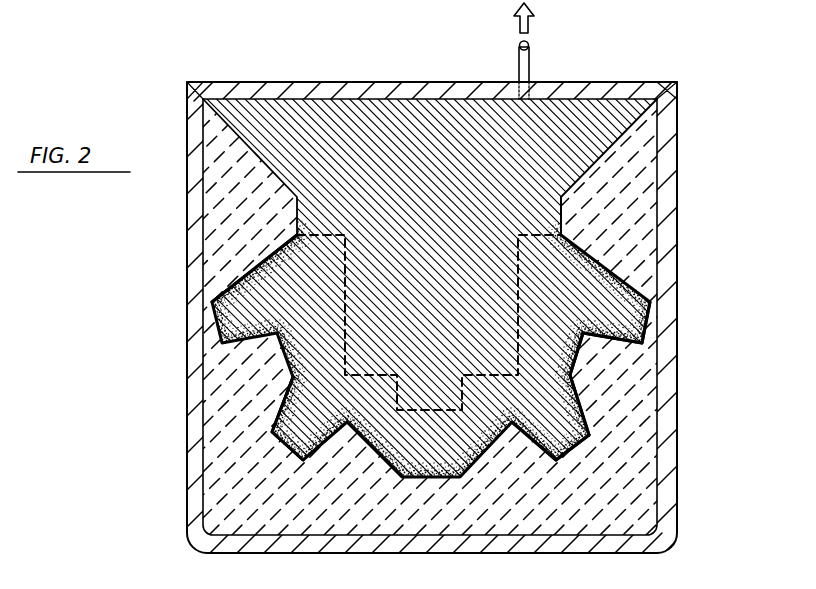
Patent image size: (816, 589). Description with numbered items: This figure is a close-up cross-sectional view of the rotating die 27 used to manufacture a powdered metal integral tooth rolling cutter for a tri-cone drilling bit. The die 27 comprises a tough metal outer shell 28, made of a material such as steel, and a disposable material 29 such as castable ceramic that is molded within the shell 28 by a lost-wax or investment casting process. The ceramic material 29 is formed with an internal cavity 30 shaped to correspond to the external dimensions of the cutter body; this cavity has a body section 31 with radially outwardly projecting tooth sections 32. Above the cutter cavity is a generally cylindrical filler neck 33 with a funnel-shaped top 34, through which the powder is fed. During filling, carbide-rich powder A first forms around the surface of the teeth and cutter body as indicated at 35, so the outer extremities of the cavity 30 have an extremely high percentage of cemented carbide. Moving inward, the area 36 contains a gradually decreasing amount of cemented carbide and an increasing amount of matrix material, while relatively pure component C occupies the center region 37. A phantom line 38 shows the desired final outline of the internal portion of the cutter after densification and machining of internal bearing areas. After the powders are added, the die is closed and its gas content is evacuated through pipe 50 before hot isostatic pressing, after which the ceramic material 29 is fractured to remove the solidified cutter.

The rotating die 27 is at (677, 230).
The outer shell 28 is at (668, 262).
The disposable material 29 is at (629, 403).
The internal cavity 30 is at (603, 338).
The body section 31 is at (568, 374).
The tooth sections 32 is at (573, 447).
The filler neck 33 is at (560, 218).
The funnel-shaped top 34 is at (640, 126).
The outer extremities of cavity 35 is at (220, 298).
The intermediate area 36 is at (268, 313).
The center region of cavity 37 is at (448, 353).
The phantom line 38 is at (343, 317).
The pipe 50 is at (530, 68).